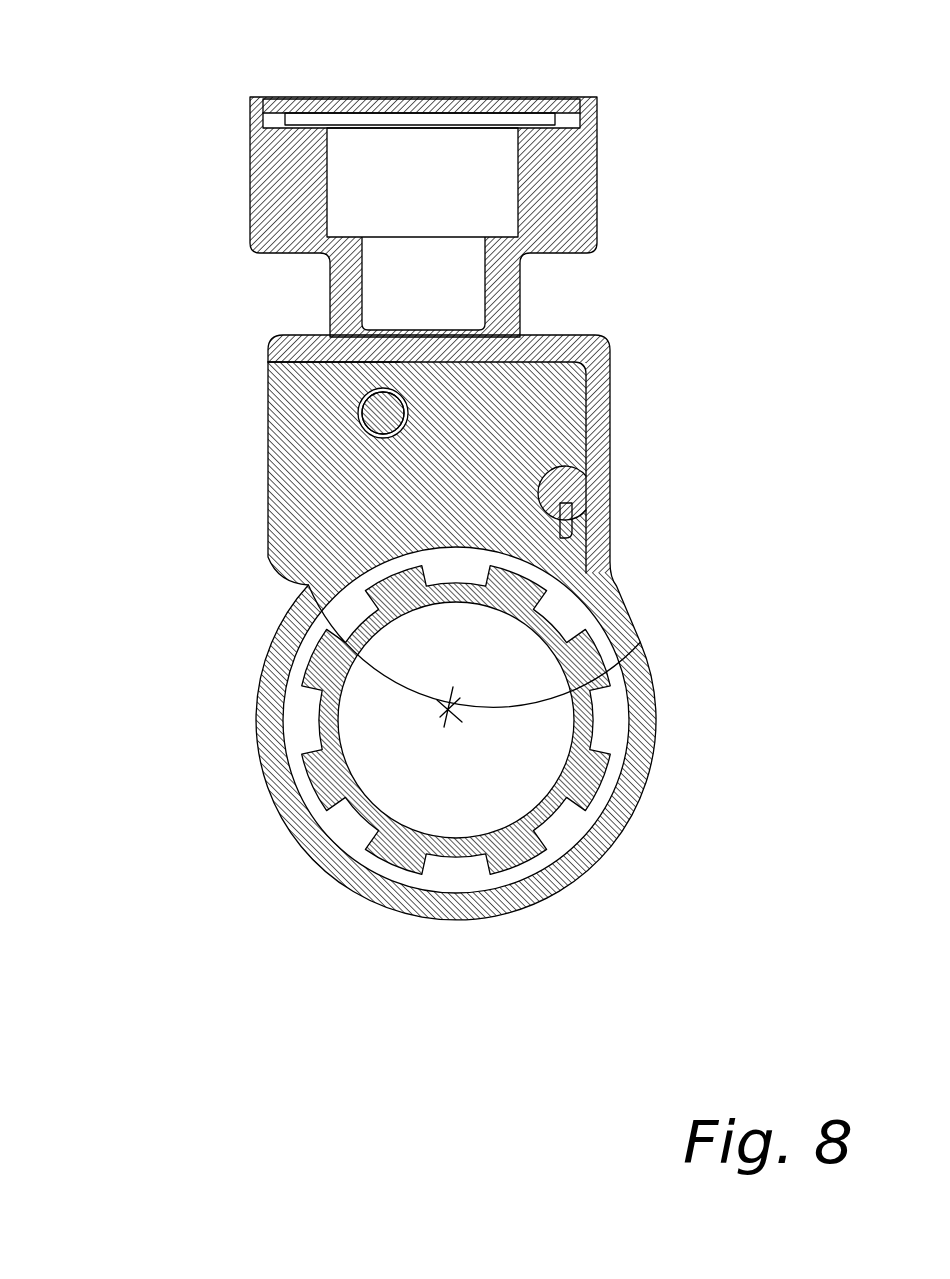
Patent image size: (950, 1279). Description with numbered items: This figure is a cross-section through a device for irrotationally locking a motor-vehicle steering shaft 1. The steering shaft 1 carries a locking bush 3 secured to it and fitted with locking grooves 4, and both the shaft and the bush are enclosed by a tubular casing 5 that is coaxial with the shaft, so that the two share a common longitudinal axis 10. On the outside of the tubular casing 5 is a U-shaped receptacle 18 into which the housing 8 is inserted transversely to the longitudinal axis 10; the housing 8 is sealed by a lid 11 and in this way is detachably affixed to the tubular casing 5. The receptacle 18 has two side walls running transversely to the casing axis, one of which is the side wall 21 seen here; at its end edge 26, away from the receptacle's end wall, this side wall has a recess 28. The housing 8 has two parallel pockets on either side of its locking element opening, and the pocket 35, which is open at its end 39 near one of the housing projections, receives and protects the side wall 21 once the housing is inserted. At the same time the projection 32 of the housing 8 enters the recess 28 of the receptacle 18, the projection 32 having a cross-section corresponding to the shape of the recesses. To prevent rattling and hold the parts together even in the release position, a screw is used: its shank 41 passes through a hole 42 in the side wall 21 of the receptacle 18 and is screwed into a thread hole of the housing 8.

The steering shaft 1 is at (507, 790).
The locking bush 3 is at (595, 778).
The locking grooves 4 is at (613, 718).
The tubular casing 5 is at (485, 895).
The housing 8 is at (572, 186).
The longitudinal axis 10 is at (448, 673).
The lid 11 is at (417, 107).
The receptacle 18 is at (220, 471).
The side wall 21 is at (365, 490).
The end edge 26 is at (582, 415).
The recess 28 is at (545, 468).
The projection 32 is at (570, 543).
The pocket 35 is at (778, 278).
The end 39 is at (262, 366).
The shank 41 is at (368, 402).
The hole 42 is at (363, 430).